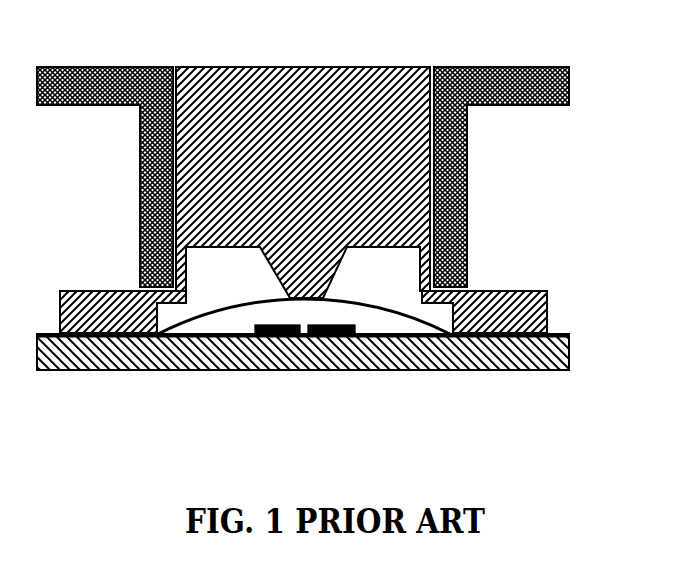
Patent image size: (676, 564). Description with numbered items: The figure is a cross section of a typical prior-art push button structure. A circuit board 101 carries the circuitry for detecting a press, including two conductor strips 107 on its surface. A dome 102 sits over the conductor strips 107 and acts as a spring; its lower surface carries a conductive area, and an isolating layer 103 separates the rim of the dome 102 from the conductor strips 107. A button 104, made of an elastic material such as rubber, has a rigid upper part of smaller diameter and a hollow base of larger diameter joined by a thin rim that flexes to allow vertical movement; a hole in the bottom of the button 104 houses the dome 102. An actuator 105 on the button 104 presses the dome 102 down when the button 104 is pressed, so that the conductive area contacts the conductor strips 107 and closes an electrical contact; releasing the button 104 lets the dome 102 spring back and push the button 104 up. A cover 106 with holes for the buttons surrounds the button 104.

The circuit board 101 is at (540, 368).
The dome 102 is at (227, 315).
The isolating layer 103 is at (570, 332).
The button 104 is at (357, 65).
The actuator 105 is at (327, 290).
The cover 106 is at (83, 67).
The conductor strips 107 is at (330, 335).